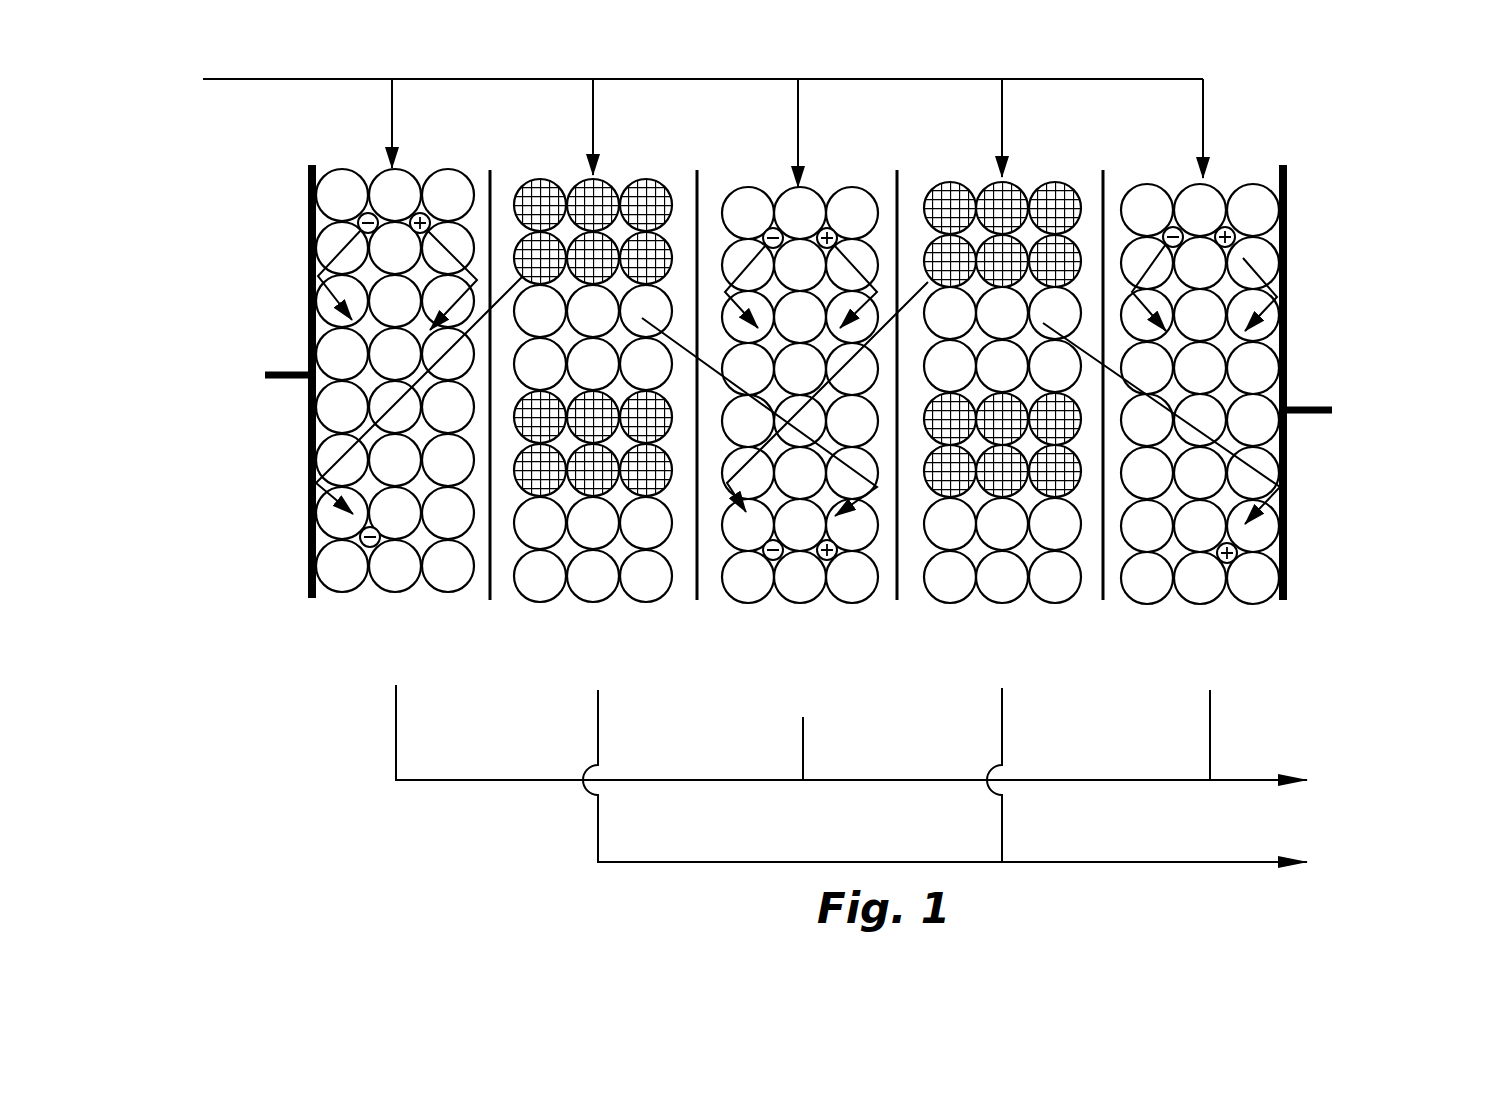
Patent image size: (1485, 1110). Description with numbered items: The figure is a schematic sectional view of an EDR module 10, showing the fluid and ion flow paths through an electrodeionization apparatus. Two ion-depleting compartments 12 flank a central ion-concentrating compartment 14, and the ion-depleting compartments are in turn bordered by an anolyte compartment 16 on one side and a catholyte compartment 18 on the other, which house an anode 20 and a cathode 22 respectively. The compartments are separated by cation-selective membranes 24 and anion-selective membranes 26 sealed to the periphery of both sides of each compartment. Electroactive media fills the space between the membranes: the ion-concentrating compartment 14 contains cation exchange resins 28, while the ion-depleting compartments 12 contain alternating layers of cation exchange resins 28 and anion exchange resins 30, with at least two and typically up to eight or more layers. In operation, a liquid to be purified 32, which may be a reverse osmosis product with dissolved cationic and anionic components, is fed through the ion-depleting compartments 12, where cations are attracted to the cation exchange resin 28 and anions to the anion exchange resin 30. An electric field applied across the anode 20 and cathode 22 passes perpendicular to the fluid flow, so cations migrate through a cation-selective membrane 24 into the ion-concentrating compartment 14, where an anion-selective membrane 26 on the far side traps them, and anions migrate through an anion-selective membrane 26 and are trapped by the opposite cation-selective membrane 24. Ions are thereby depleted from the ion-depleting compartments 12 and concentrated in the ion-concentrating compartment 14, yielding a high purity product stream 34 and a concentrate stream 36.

The EDR module 10 is at (290, 250).
The ion-depleting compartment 12 is at (637, 160).
The ion-concentrating compartment 14 is at (822, 170).
The anolyte compartment 16 is at (418, 168).
The catholyte compartment 18 is at (1245, 168).
The anode 20 is at (290, 380).
The cathode 22 is at (1318, 414).
The cation-selective membrane 24 is at (695, 600).
The anion-selective membrane 26 is at (488, 600).
The cation exchange resin 28 is at (517, 367).
The anion exchange resin 30 is at (550, 180).
The liquid to be purified 32 is at (490, 79).
The high purity product stream 34 is at (868, 861).
The concentrate stream 36 is at (857, 783).